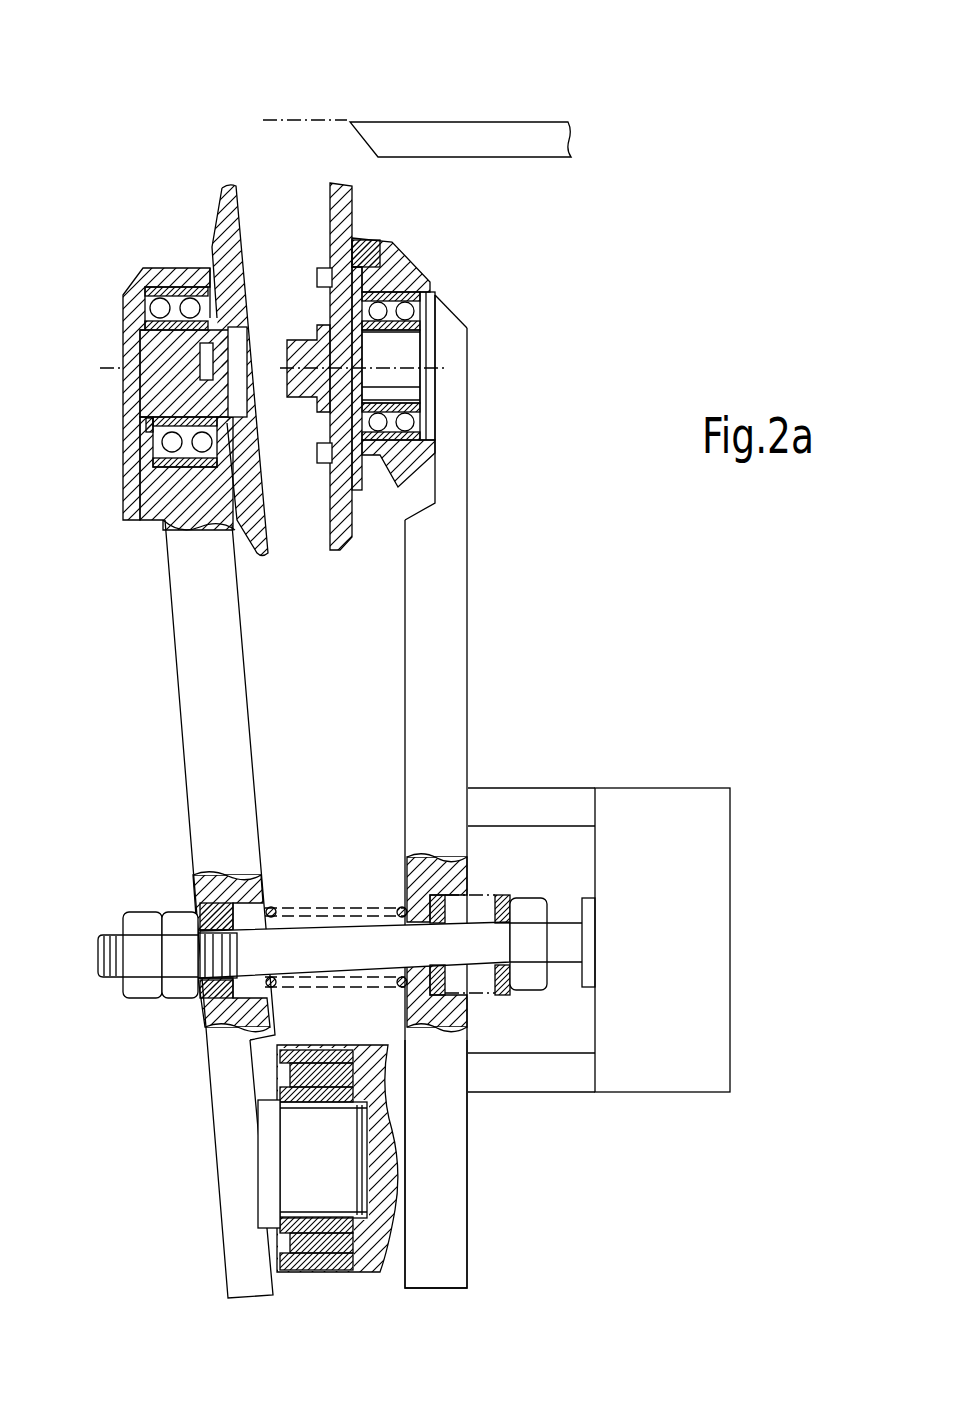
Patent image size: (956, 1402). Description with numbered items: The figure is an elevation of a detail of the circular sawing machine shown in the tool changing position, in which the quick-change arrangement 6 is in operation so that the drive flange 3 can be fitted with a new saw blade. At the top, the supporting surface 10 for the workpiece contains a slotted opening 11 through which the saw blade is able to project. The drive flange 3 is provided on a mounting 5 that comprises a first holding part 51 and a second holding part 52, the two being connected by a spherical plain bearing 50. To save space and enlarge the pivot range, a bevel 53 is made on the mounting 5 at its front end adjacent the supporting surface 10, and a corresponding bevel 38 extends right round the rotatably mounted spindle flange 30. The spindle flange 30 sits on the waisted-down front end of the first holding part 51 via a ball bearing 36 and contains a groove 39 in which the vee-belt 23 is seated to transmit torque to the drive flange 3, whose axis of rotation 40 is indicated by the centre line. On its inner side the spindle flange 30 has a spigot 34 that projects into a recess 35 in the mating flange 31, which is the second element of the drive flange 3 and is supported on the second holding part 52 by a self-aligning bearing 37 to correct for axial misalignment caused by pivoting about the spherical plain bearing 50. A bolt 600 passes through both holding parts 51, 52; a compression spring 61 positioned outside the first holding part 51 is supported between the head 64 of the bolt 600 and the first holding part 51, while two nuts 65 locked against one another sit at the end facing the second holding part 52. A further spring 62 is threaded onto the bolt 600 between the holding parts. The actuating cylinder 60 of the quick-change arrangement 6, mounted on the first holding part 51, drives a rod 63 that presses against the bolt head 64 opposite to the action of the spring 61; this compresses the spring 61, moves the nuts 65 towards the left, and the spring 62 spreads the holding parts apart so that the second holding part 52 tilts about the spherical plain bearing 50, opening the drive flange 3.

The drive flange 3 is at (488, 408).
The mounting 5 is at (445, 713).
The quick-change arrangement 6 is at (593, 763).
The supporting surface 10 is at (553, 130).
The opening 11 is at (316, 104).
The vee-belt 23 is at (380, 237).
The spindle flange 30 is at (340, 530).
The mating flange 31 is at (180, 540).
The spigot 34 is at (300, 333).
The recess 35 is at (222, 363).
The ball bearing 36 is at (420, 325).
The self-aligning bearing 37 is at (158, 423).
The bevel 38 is at (413, 258).
The groove 39 is at (370, 478).
The axis of rotation 40 is at (410, 363).
The spherical plain bearing 50 is at (330, 1228).
The first holding part 51 is at (447, 1202).
The second holding part 52 is at (218, 1102).
The bevel 53 is at (462, 298).
The actuating cylinder 60 is at (695, 870).
The spring 61 is at (507, 995).
The spring 62 is at (296, 908).
The rod 63 is at (563, 937).
The head 64 is at (533, 980).
The nuts 65 is at (180, 992).
The bolt 600 is at (350, 940).